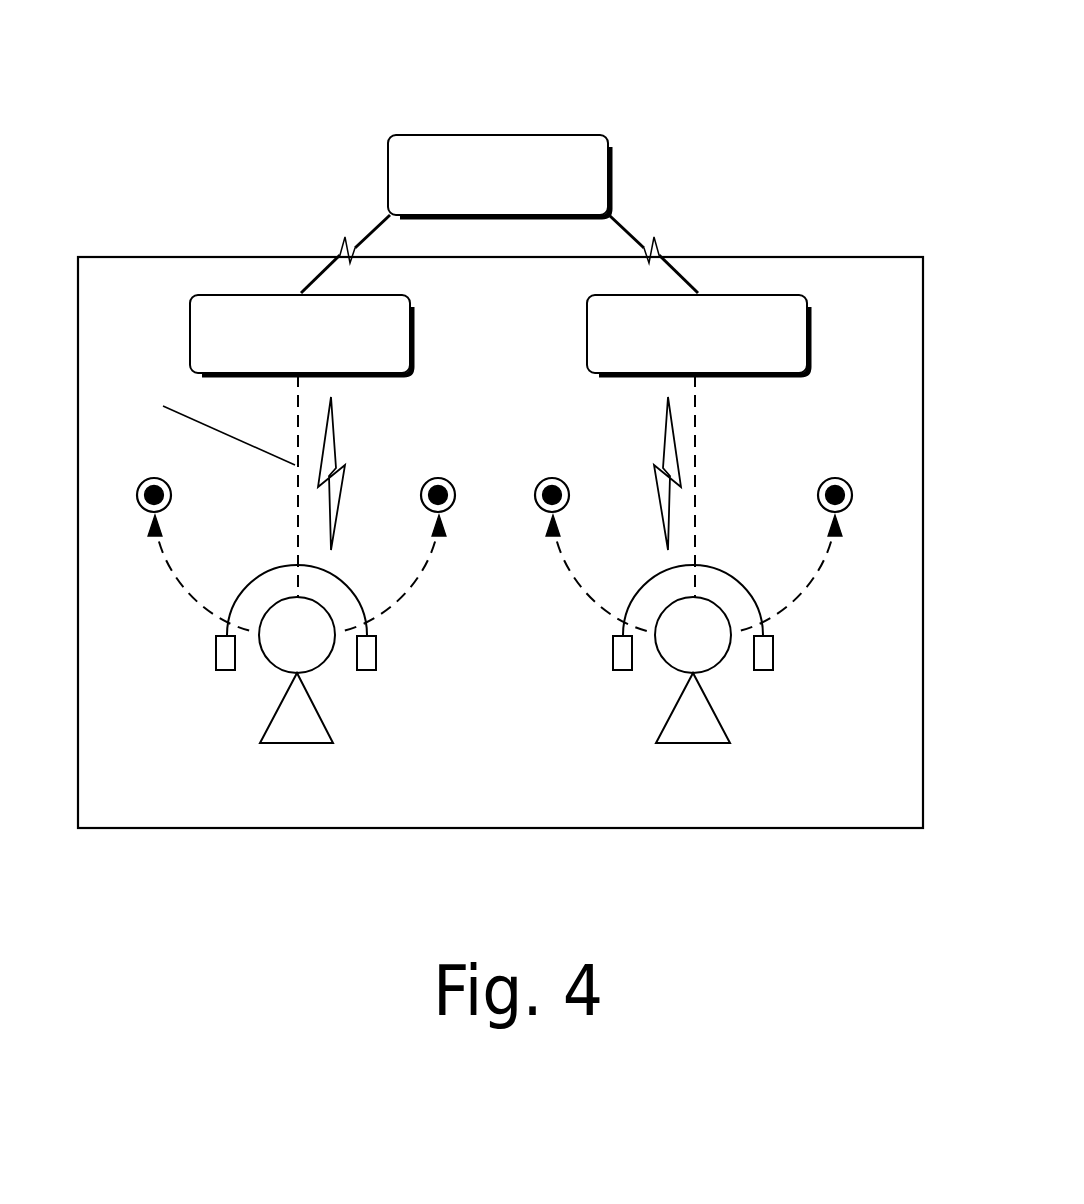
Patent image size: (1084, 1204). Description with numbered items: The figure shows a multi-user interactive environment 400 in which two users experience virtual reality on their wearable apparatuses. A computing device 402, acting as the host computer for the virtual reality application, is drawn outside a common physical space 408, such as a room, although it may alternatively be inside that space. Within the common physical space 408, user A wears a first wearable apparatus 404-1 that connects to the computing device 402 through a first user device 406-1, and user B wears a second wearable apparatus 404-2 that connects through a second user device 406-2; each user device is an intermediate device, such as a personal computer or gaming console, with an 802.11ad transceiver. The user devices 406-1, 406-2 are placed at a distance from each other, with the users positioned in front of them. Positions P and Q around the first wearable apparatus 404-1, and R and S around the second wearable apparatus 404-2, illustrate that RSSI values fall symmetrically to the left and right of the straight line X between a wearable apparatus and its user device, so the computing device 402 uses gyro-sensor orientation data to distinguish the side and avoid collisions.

The multi-user interactive environment 400 is at (662, 98).
The computing device 402 is at (499, 176).
The first wearable apparatus 404-1 is at (228, 672).
The second wearable apparatus 404-2 is at (766, 672).
The first user device 406-1 is at (301, 335).
The second user device 406-2 is at (698, 335).
The common physical space 408 is at (800, 257).